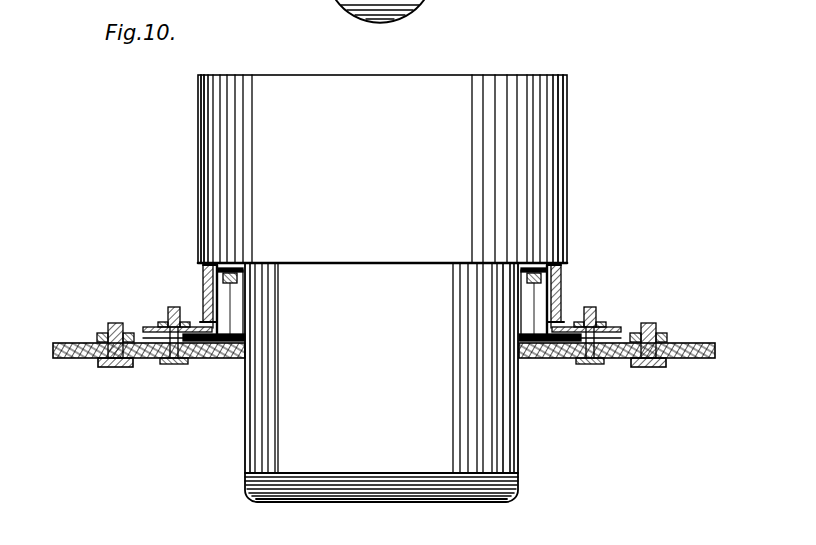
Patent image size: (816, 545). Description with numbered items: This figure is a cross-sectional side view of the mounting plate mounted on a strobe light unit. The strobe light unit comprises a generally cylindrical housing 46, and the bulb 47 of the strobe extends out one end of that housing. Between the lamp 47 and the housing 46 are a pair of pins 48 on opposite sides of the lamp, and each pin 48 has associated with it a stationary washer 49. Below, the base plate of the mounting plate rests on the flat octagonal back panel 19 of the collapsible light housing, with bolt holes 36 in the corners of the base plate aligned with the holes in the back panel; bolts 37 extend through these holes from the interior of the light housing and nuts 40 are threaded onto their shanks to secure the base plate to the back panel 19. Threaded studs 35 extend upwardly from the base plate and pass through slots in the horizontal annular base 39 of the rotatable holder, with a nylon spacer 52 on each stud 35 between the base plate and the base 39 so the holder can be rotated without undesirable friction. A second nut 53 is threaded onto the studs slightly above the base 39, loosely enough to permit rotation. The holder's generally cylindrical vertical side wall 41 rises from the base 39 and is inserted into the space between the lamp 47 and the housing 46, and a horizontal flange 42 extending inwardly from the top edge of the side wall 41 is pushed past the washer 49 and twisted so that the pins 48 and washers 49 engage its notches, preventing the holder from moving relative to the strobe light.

The housing 46 is at (568, 152).
The bulb 47 is at (504, 445).
The horizontal flange 42 is at (208, 265).
The stationary washer 49 is at (236, 263).
The pin 48 is at (231, 284).
The side wall 41 is at (213, 321).
The annular base 39 is at (150, 328).
The back panel 19 is at (198, 358).
The threaded stud 35 is at (170, 308).
The second nut 53 is at (190, 323).
The bolt 37 is at (110, 324).
The nut 40 is at (100, 335).
The bolt hole 36 is at (108, 366).
The nylon spacer 52 is at (155, 358).